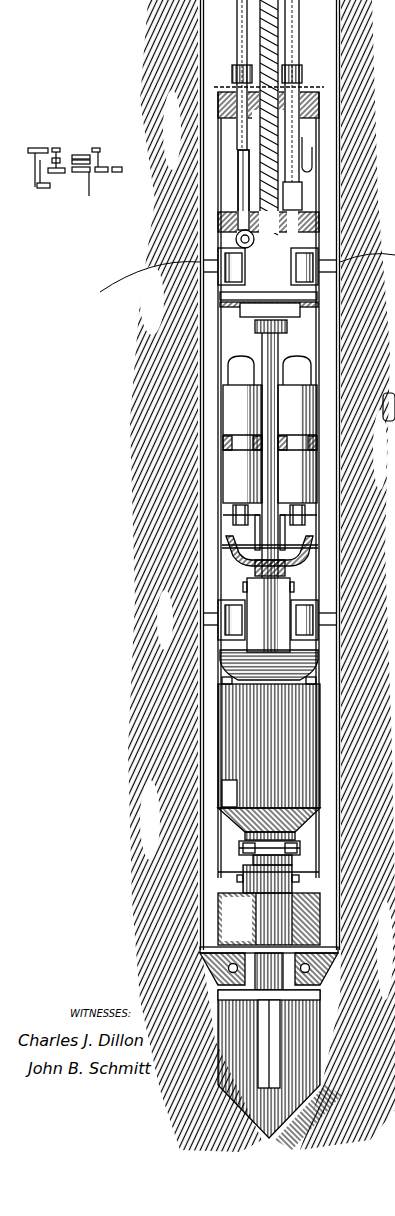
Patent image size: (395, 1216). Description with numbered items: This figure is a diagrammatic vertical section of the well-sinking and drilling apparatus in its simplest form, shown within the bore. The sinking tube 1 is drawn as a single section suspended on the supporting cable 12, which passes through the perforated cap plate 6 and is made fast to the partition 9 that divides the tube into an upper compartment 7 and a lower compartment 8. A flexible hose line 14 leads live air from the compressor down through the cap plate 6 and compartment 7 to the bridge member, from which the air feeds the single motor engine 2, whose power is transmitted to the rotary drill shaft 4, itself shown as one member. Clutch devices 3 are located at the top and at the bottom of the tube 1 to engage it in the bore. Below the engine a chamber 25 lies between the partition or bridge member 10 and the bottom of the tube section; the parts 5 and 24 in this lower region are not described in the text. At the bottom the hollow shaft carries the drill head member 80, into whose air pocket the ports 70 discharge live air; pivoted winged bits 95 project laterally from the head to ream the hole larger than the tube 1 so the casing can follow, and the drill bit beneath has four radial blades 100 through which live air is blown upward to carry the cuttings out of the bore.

The sinking tube 1 is at (218, 128).
The motor engine 2 is at (266, 291).
The clutch devices 3 is at (233, 605).
The rotary drill shaft 4 is at (282, 344).
The cup 5 is at (269, 558).
The perforated top or cap plate 6 is at (303, 94).
The upper compartment 7 is at (236, 183).
The lower compartment 8 is at (269, 288).
The partition 9 is at (268, 199).
The partition or bridge member 10 is at (235, 238).
The supporting cable 12 is at (278, 31).
The flexible hose line 14 is at (244, 46).
The block 24 is at (268, 615).
The chamber 25 is at (320, 687).
The ports 70 is at (240, 848).
The drill head member 80 is at (269, 919).
The winged bits 95 is at (322, 958).
The radial blades 100 is at (296, 1062).